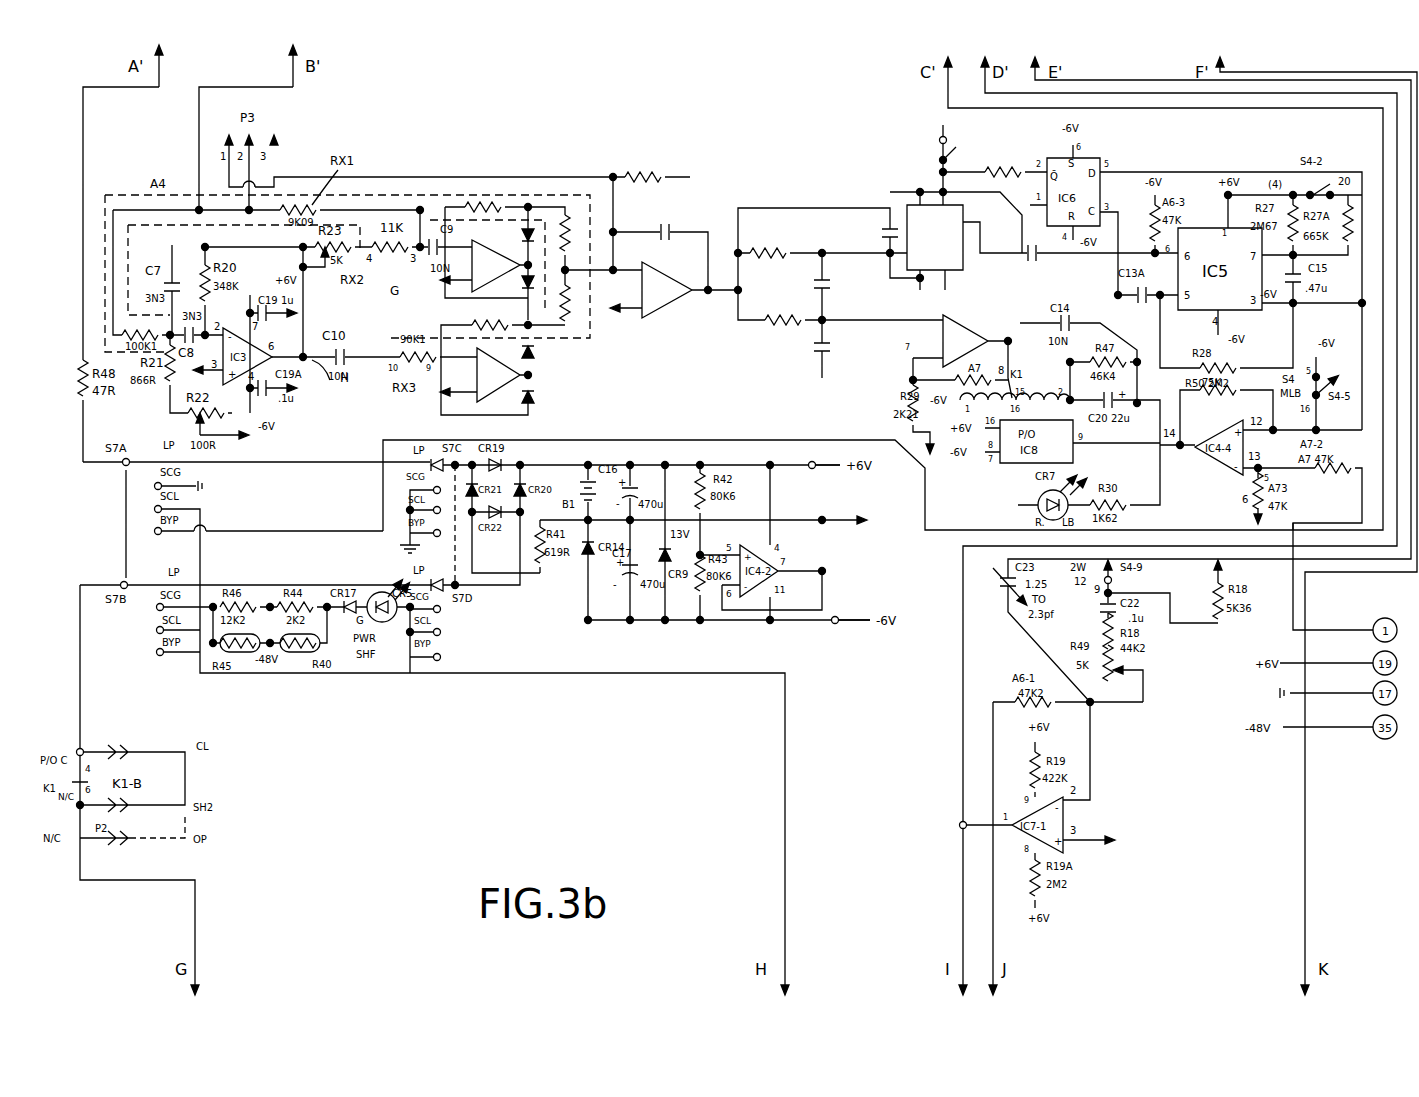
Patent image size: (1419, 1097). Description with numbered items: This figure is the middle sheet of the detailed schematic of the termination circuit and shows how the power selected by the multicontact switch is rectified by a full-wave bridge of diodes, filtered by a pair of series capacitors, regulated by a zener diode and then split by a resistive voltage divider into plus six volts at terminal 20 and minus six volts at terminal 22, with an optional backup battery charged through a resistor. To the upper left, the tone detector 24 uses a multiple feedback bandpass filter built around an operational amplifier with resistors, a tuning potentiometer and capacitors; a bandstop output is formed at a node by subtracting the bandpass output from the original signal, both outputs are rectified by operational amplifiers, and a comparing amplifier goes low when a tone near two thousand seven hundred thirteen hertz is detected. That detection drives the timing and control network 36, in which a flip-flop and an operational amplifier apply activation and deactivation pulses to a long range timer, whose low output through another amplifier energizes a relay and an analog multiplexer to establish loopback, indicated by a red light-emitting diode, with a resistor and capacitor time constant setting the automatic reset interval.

The terminal 20 is at (812, 463).
The terminal 22 is at (838, 619).
The tone detector 24 is at (515, 162).
The timing and control network 36 is at (848, 188).